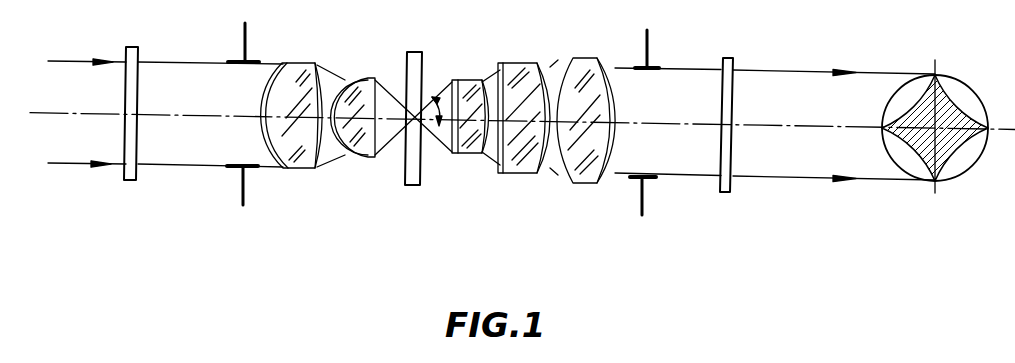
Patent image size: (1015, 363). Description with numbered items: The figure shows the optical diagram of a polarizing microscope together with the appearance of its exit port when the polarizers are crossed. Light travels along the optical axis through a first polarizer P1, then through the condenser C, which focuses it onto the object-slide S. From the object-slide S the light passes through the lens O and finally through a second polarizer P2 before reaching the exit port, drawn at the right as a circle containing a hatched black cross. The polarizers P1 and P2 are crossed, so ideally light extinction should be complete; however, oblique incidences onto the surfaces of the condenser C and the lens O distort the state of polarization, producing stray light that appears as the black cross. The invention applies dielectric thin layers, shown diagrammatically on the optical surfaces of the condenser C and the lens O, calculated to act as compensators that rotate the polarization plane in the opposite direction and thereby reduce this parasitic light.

The polarizer P1 is at (130, 181).
The condenser C is at (372, 206).
The object-slide S is at (413, 52).
The aperture angle U is at (442, 98).
The lens O is at (587, 209).
The polarizer P2 is at (724, 193).